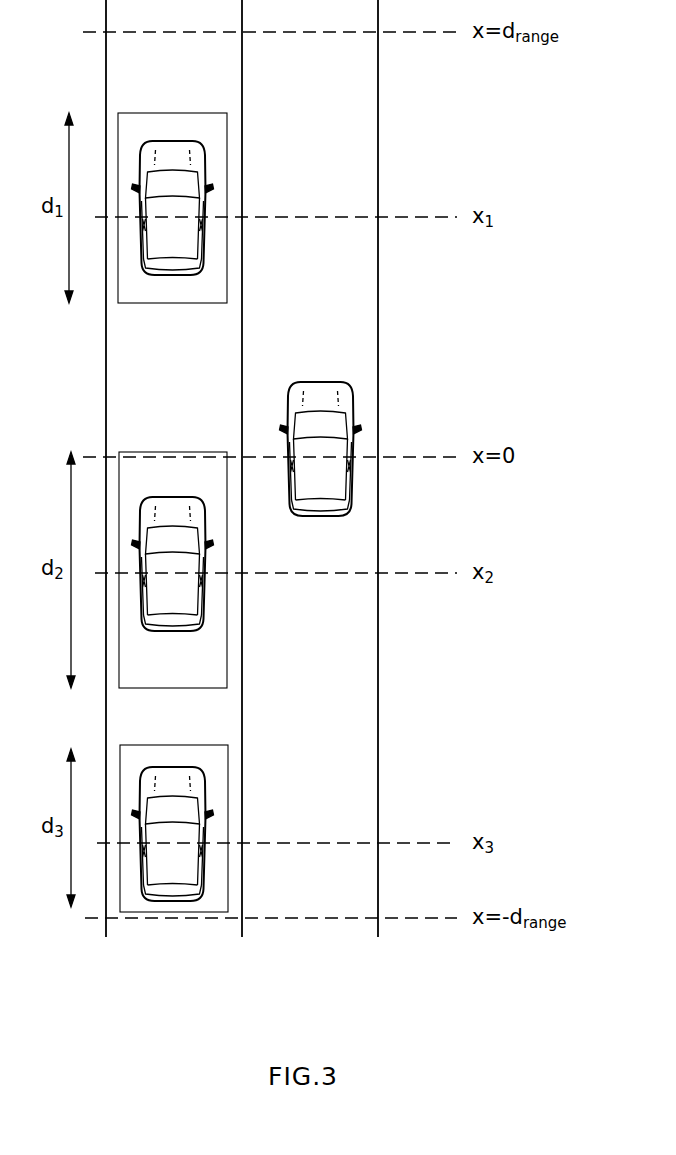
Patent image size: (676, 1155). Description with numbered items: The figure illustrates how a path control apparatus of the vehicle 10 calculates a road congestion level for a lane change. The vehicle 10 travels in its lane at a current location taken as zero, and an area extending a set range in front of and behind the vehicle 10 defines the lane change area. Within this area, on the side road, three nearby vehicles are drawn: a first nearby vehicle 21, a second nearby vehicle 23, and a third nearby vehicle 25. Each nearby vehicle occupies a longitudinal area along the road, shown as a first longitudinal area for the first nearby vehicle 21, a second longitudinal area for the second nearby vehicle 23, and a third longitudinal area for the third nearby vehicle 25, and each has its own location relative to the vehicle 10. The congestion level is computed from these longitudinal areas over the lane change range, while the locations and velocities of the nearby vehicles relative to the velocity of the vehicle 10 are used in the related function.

The vehicle 10 is at (320, 381).
The first nearby vehicle 21 is at (205, 256).
The second nearby vehicle 23 is at (205, 613).
The third nearby vehicle 25 is at (205, 882).